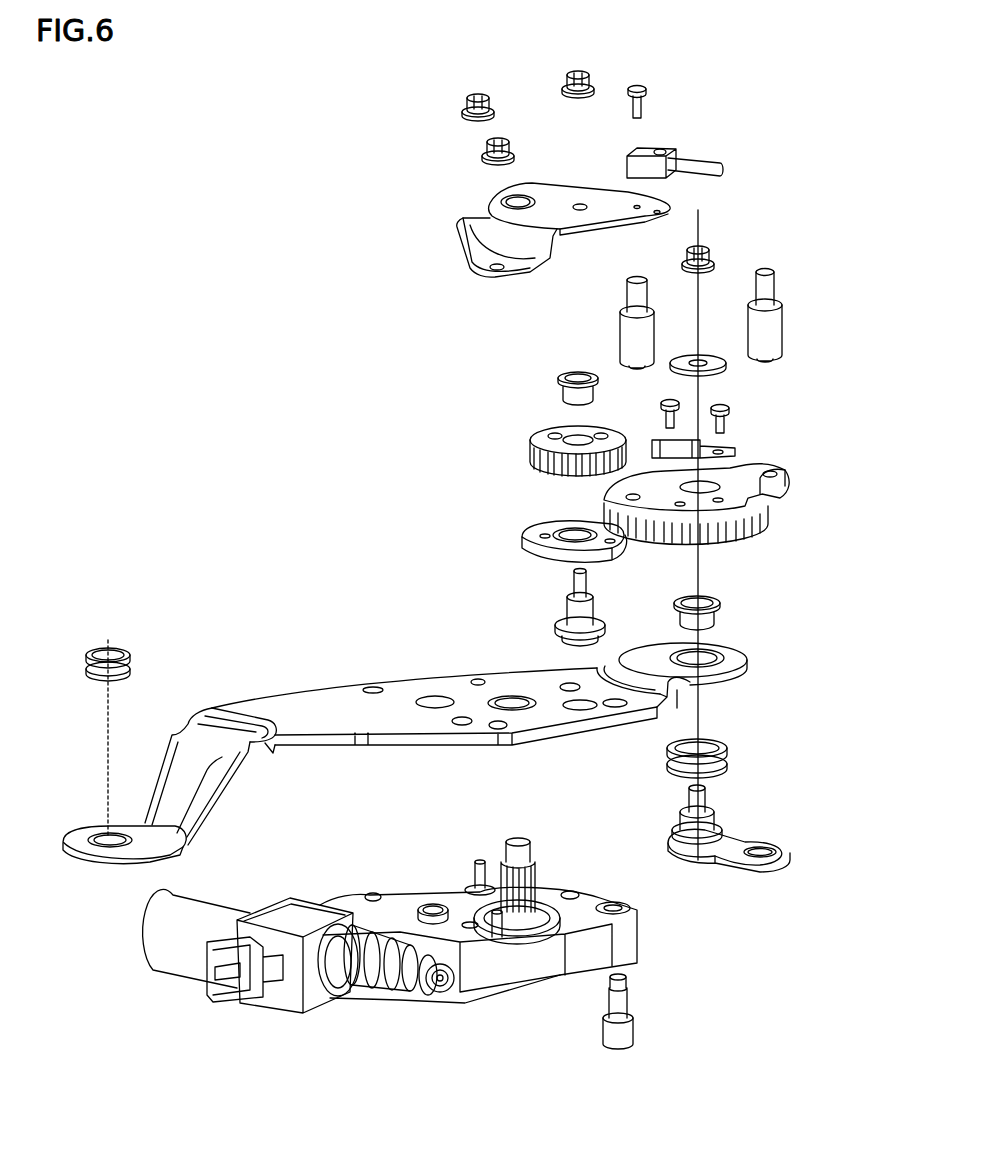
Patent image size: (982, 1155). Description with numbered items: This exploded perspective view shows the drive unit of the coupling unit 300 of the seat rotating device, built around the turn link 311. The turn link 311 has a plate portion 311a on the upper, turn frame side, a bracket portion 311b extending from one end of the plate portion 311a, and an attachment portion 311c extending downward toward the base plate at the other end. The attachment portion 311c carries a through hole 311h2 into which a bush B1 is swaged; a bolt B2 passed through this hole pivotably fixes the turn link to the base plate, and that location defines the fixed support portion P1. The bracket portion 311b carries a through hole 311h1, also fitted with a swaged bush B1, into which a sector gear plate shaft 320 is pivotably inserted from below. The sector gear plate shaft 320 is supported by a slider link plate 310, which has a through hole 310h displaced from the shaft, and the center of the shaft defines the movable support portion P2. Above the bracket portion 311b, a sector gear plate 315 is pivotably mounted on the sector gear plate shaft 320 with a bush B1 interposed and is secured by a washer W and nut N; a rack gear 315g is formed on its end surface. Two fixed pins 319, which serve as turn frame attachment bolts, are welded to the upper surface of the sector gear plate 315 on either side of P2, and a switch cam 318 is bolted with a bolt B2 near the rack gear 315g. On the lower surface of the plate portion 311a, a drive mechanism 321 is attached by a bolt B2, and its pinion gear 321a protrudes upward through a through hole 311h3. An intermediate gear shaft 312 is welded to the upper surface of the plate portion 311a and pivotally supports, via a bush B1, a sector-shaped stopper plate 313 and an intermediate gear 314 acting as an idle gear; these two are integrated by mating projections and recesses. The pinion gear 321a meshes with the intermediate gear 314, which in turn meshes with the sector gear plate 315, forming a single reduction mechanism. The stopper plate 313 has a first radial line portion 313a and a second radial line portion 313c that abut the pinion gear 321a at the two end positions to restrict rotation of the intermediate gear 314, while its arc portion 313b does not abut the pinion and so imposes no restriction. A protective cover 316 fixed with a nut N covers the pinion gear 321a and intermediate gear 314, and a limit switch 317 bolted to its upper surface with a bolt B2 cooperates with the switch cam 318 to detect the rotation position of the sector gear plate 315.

The coupling unit 300 is at (776, 991).
The slider link plate 310 is at (762, 844).
The through hole 310h is at (765, 847).
The turn link 311 is at (438, 742).
The plate portion 311a is at (313, 703).
The bracket portion 311b is at (687, 672).
The attachment portion 311c is at (143, 853).
The through hole 311h1 is at (712, 650).
The through hole 311h2 is at (100, 833).
The through hole 311h3 is at (508, 698).
The intermediate gear shaft 312 is at (590, 600).
The stopper plate 313 is at (581, 526).
The first radial line portion 313a is at (528, 536).
The arc portion 313b is at (578, 520).
The second radial line portion 313c is at (622, 550).
The intermediate gear 314 is at (538, 430).
The sector gear plate 315 is at (731, 507).
The rack gear 315g is at (762, 516).
The protective cover 316 is at (485, 235).
The limit switch 317 is at (655, 146).
The switch cam 318 is at (736, 444).
The fixed pin 319 is at (645, 300).
The sector gear plate shaft 320 is at (700, 800).
The drive mechanism 321 is at (390, 934).
The pinion gear 321a is at (537, 874).
The bush B1 is at (568, 380).
The bolt B2 is at (636, 86).
The nut N is at (470, 93).
The washer W is at (712, 360).
The fixed support portion P1 is at (106, 716).
The movable support portion P2 is at (700, 226).